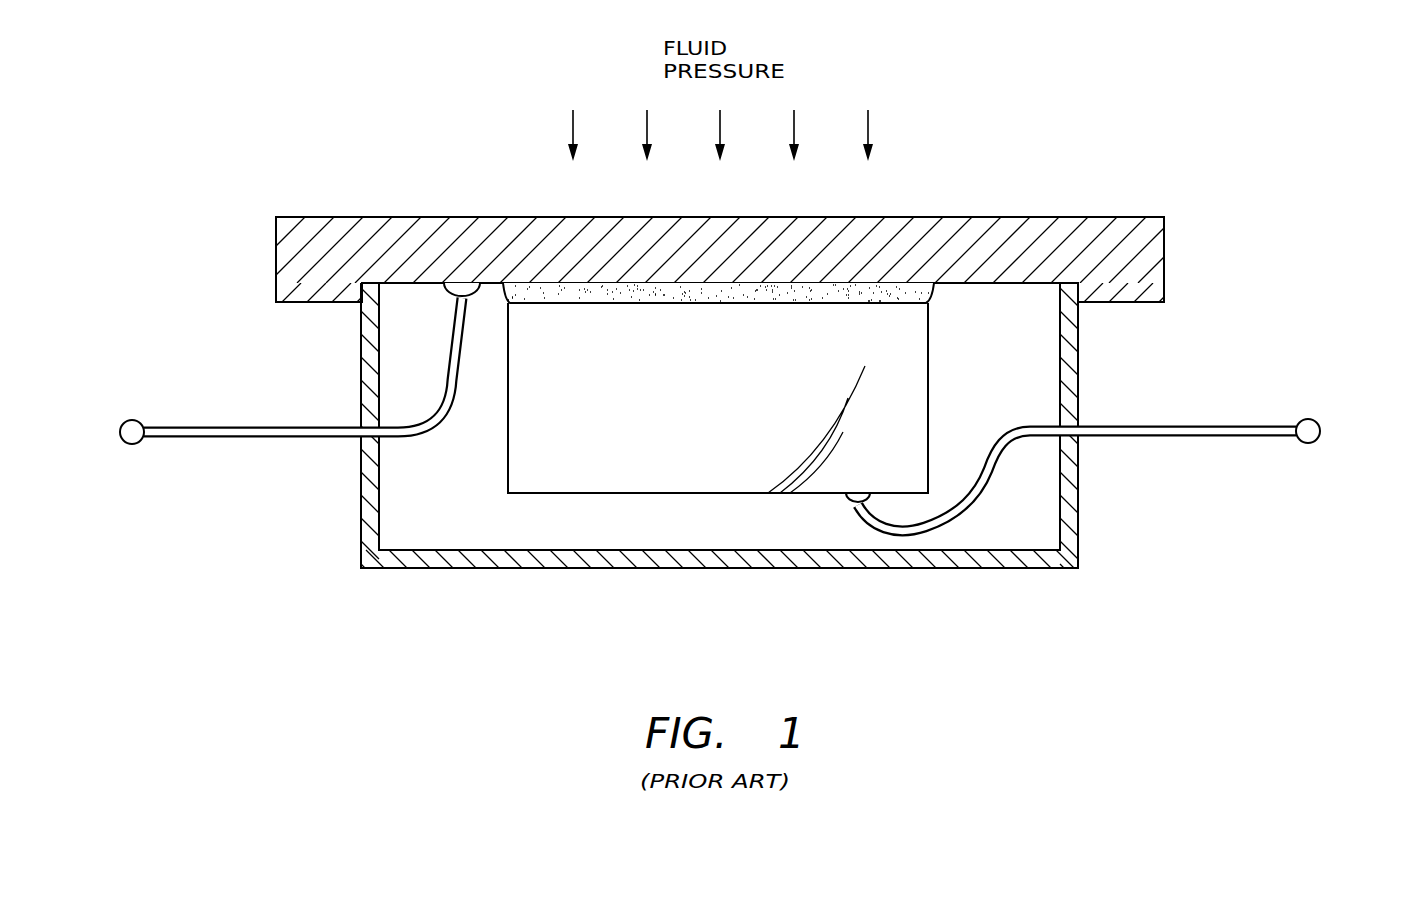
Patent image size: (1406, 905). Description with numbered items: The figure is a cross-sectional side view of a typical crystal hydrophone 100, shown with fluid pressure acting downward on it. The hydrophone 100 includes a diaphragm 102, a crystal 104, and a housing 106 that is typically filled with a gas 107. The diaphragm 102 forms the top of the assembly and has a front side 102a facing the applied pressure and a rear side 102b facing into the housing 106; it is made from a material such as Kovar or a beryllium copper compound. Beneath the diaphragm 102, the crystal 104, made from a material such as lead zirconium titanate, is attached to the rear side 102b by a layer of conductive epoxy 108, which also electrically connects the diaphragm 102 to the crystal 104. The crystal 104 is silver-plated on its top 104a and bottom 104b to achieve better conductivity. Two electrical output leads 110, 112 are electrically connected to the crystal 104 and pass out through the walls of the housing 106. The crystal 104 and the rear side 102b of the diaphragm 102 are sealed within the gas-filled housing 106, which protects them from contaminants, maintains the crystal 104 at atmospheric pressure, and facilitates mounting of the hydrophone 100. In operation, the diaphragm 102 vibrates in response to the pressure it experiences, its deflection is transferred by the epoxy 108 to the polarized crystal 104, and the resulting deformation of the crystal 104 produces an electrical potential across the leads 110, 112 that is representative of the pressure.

The crystal hydrophone 100 is at (291, 647).
The diaphragm 102 is at (1166, 252).
The front side of diaphragm 102a is at (958, 216).
The rear side of diaphragm 102b is at (955, 287).
The crystal 104 is at (738, 415).
The top of crystal 104a is at (640, 303).
The bottom of crystal 104b is at (625, 495).
The housing 106 is at (653, 568).
The gas 107 is at (460, 502).
The conductive epoxy 108 is at (745, 299).
The electrical output lead 110 is at (119, 432).
The electrical output lead 112 is at (1322, 431).